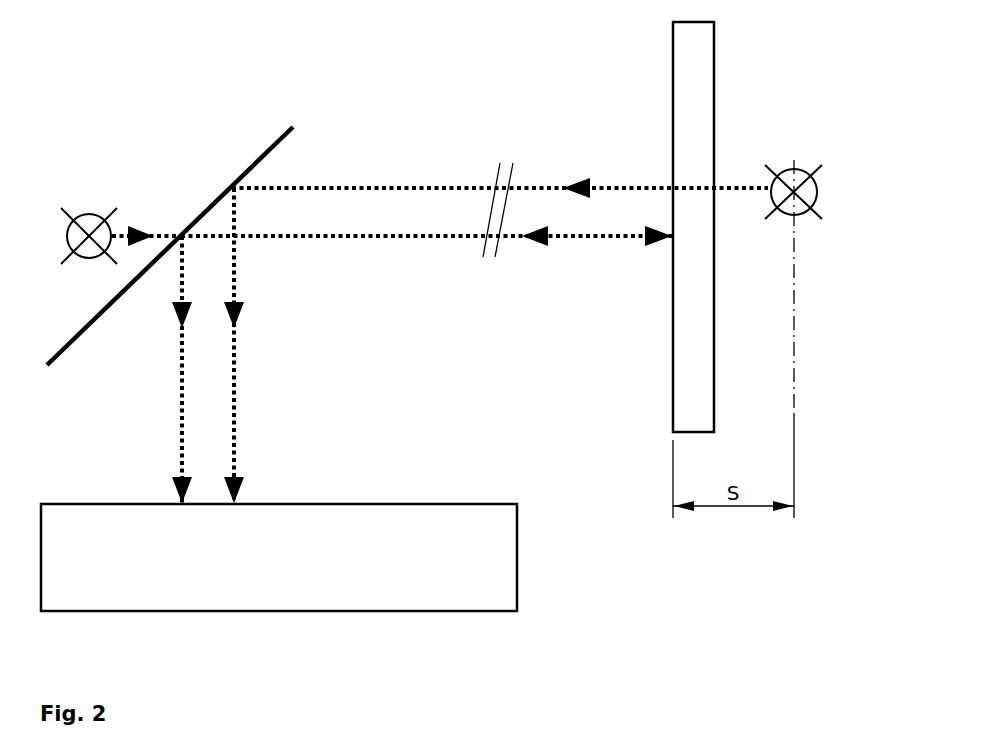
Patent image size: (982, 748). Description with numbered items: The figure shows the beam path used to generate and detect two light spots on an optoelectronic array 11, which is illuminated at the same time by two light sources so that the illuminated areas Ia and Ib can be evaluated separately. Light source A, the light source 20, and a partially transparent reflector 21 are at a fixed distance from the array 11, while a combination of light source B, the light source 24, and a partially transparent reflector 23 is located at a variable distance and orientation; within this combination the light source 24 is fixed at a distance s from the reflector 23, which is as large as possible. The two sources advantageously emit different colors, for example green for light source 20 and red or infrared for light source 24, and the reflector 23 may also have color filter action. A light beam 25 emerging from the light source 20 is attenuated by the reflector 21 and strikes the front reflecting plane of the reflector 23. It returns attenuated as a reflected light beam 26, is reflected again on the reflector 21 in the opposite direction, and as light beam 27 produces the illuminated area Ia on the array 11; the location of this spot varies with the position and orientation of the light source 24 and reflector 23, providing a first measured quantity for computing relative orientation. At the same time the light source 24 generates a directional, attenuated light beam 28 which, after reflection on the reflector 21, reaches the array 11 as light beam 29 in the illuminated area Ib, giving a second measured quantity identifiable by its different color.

The optoelectronic array 11 is at (82, 502).
The light source A 20 is at (67, 232).
The partially transparent reflector 21 is at (267, 143).
The partially transparent reflector 23 is at (673, 87).
The light source B 24 is at (822, 191).
The light beam 25 is at (180, 233).
The reflected light beam 26 is at (388, 242).
The light beam 27 is at (177, 427).
The light beam 28 is at (417, 185).
The light beam 29 is at (238, 427).